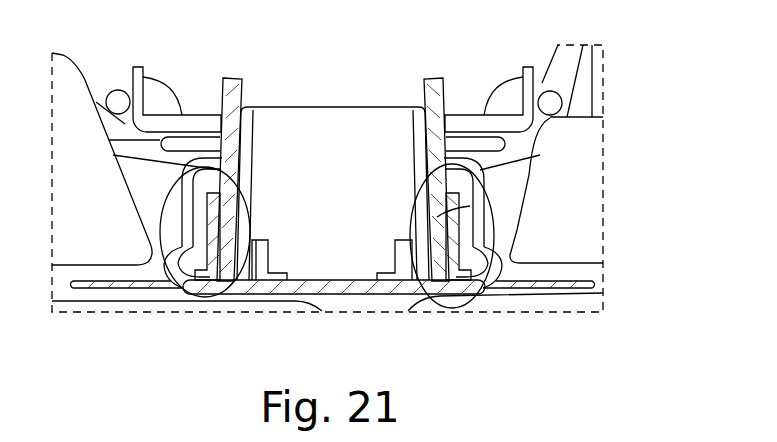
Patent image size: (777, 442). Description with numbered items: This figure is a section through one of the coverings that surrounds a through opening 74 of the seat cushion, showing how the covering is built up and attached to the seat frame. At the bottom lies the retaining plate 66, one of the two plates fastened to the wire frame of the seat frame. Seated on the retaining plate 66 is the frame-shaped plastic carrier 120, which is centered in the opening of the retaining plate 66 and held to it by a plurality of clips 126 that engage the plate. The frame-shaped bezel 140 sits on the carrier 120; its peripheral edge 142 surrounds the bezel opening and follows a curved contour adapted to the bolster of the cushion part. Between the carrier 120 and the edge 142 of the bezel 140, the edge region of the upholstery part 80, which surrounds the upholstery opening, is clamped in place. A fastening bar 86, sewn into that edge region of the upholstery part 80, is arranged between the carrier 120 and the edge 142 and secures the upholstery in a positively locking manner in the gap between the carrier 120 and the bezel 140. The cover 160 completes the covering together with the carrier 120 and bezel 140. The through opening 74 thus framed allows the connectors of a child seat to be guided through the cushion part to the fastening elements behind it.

The retaining plate 66 is at (491, 85).
The through opening 74 is at (325, 143).
The upholstery part 80 is at (552, 284).
The fastening bar 86 is at (437, 217).
The carrier 120 is at (442, 78).
The clip 126 is at (223, 78).
The bezel 140 is at (465, 284).
The peripheral edge 142 is at (207, 283).
The cover 160 is at (353, 283).